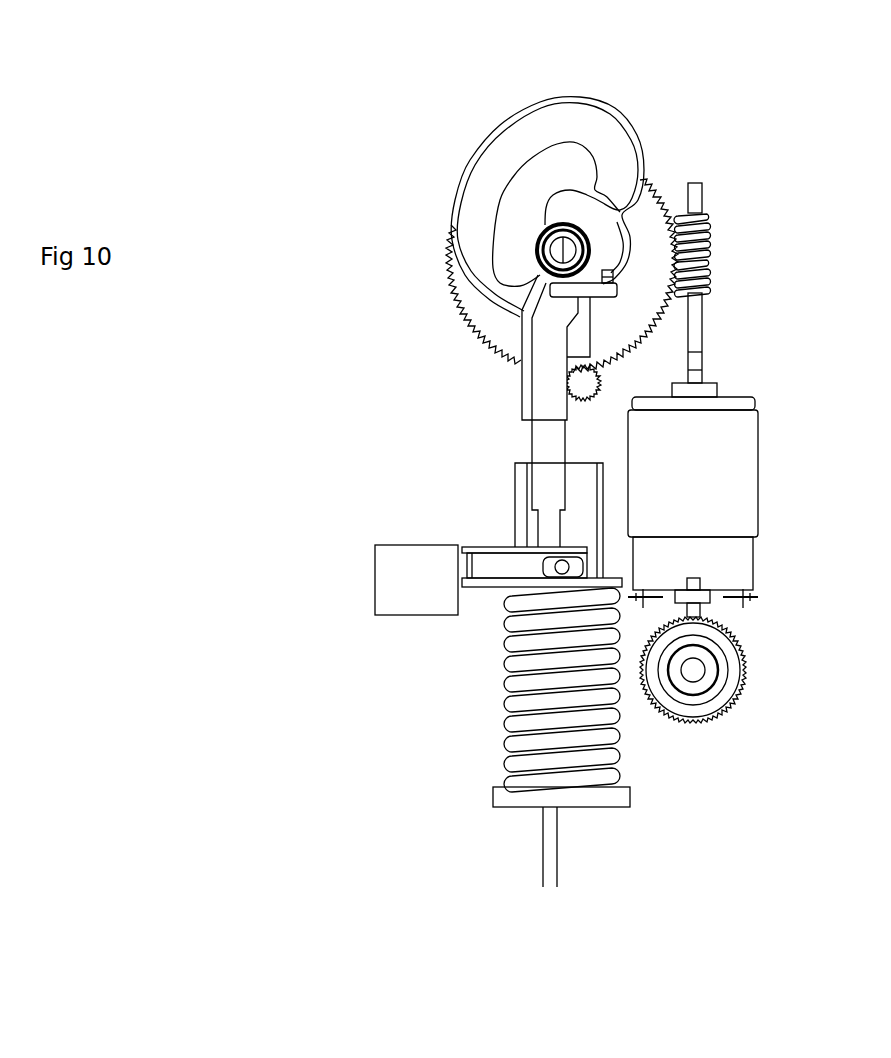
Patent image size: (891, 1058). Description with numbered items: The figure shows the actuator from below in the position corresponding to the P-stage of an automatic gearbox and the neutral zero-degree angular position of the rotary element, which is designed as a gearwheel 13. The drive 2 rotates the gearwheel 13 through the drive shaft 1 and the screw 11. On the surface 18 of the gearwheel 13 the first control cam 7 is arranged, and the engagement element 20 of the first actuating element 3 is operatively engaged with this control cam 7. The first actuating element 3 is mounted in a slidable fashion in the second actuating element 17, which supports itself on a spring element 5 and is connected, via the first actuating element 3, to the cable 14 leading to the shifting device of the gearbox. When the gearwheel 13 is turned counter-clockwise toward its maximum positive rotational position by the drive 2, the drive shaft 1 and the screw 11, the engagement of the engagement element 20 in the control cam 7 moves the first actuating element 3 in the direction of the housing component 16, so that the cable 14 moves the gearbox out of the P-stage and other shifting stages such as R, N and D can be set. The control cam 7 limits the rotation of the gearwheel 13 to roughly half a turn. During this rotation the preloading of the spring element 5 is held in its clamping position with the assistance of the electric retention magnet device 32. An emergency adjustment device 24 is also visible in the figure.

The first control cam 7 is at (562, 117).
The gearwheel 13 is at (657, 180).
The drive shaft 1 is at (693, 193).
The screw 11 is at (708, 245).
The surface 18 is at (632, 320).
The drive 2 is at (748, 495).
The emergency adjustment device 24 is at (768, 679).
The engagement element 20 is at (537, 292).
The first actuating element 3 is at (542, 432).
The second actuating element 17 is at (592, 475).
The retention magnet device 32 is at (388, 595).
The spring element 5 is at (613, 733).
The housing component 16 is at (628, 793).
The cable 14 is at (550, 850).